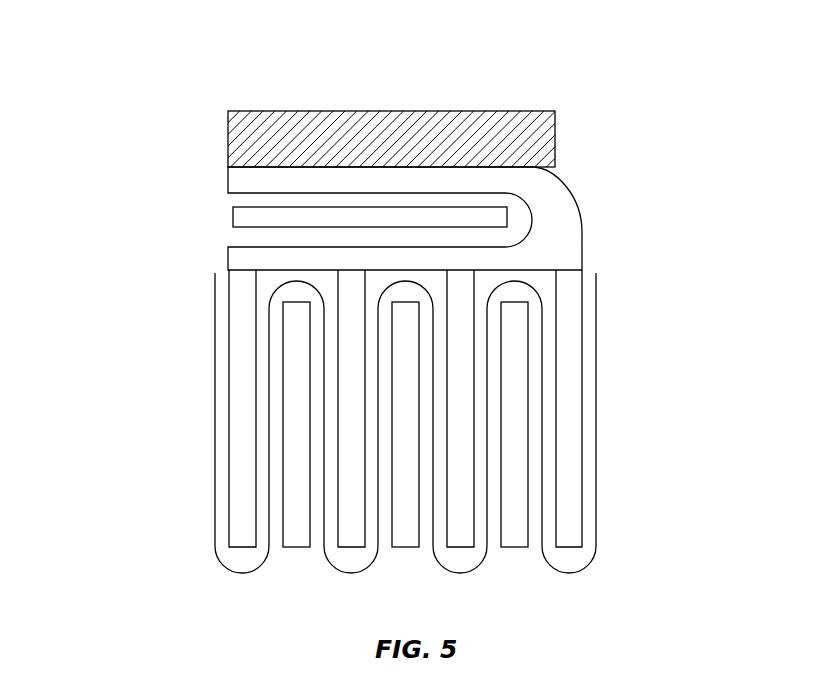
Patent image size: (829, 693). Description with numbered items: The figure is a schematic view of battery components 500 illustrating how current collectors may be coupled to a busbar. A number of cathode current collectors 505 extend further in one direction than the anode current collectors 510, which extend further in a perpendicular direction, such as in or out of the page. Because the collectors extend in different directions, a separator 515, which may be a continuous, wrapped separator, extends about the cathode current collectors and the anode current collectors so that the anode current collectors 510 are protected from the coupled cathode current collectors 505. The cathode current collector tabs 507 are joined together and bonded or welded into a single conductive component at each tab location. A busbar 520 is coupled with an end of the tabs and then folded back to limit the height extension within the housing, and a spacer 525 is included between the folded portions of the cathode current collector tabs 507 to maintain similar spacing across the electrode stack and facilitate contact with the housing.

The battery components 500 is at (112, 150).
The cathode current collectors 505 is at (583, 415).
The cathode current collector tabs 507 is at (583, 234).
The anode current collectors 510 is at (300, 549).
The separator 515 is at (215, 425).
The busbar 520 is at (557, 133).
The spacer 525 is at (233, 216).